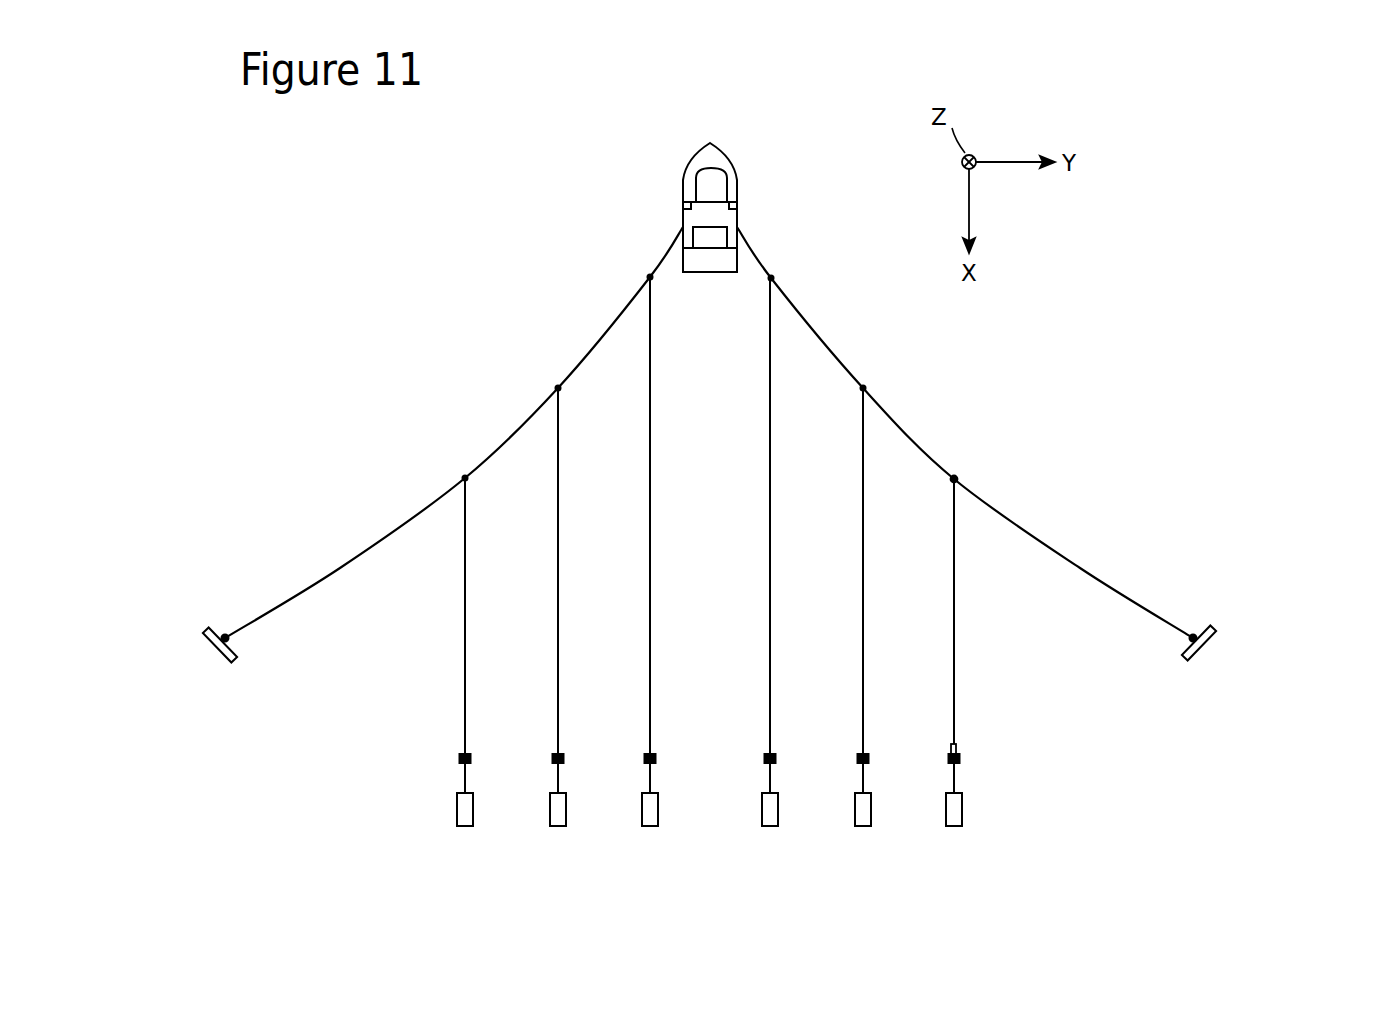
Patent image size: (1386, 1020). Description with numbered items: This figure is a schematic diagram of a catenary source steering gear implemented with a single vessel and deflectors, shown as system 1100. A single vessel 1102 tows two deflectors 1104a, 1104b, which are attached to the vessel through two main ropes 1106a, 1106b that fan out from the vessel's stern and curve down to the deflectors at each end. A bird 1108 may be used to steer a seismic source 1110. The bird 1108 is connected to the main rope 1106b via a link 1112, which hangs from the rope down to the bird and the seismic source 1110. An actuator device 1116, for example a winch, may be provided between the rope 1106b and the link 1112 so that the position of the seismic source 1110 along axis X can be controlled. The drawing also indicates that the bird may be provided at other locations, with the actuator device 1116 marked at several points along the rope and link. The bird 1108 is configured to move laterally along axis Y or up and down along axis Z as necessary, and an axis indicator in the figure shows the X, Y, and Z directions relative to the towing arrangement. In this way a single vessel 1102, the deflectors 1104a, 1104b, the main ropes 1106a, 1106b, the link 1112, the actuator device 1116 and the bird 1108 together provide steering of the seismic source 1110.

The system 1100 is at (732, 71).
The single vessel 1102 is at (738, 192).
The deflector 1104a is at (212, 627).
The deflector 1104b is at (1203, 648).
The main rope 1106a is at (420, 515).
The main rope 1106b is at (990, 508).
The bird 1108 is at (962, 758).
The seismic source 1110 is at (963, 812).
The link 1112 is at (958, 690).
The actuator device 1116 is at (955, 478).